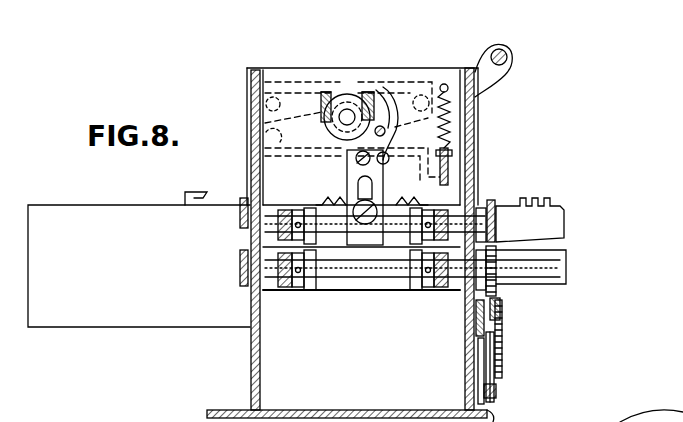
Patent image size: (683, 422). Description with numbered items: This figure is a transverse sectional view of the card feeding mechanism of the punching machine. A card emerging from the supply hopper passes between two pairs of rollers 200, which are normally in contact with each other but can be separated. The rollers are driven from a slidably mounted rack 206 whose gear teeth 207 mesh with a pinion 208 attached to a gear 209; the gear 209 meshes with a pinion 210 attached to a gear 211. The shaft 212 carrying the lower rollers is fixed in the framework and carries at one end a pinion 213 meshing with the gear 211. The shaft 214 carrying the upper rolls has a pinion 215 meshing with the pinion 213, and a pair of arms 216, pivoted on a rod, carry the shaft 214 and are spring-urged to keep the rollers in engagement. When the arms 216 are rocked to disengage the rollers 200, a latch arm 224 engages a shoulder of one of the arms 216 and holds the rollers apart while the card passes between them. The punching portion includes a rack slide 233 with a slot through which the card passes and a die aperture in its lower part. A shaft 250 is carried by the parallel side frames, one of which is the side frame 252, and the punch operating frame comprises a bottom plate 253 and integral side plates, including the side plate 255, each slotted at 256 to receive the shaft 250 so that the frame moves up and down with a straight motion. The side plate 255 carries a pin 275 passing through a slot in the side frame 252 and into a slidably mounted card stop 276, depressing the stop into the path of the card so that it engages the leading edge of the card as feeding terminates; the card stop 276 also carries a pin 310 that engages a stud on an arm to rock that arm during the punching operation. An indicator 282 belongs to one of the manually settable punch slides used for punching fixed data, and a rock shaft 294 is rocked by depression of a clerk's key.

The rollers 200 is at (313, 242).
The rack 206 is at (497, 391).
The gear teeth 207 is at (486, 356).
The pinion 208 is at (478, 340).
The gear 209 is at (495, 345).
The pinion 210 is at (503, 322).
The gear 211 is at (502, 307).
The shaft 212 is at (365, 292).
The pinion 213 is at (497, 271).
The shaft 214 is at (410, 222).
The pinion 215 is at (494, 208).
The arms 216 is at (480, 200).
The latch arm 224 is at (450, 165).
The rack slide 233 is at (562, 256).
The shaft 250 is at (347, 112).
The side frame 252 is at (430, 68).
The bottom plate 253 is at (262, 148).
The side plate 255 is at (400, 80).
The slot 256 is at (338, 82).
The pin 275 is at (382, 92).
The card stop 276 is at (348, 183).
The indicator 282 is at (185, 195).
The rock shaft 294 is at (508, 58).
The pin 310 is at (356, 160).